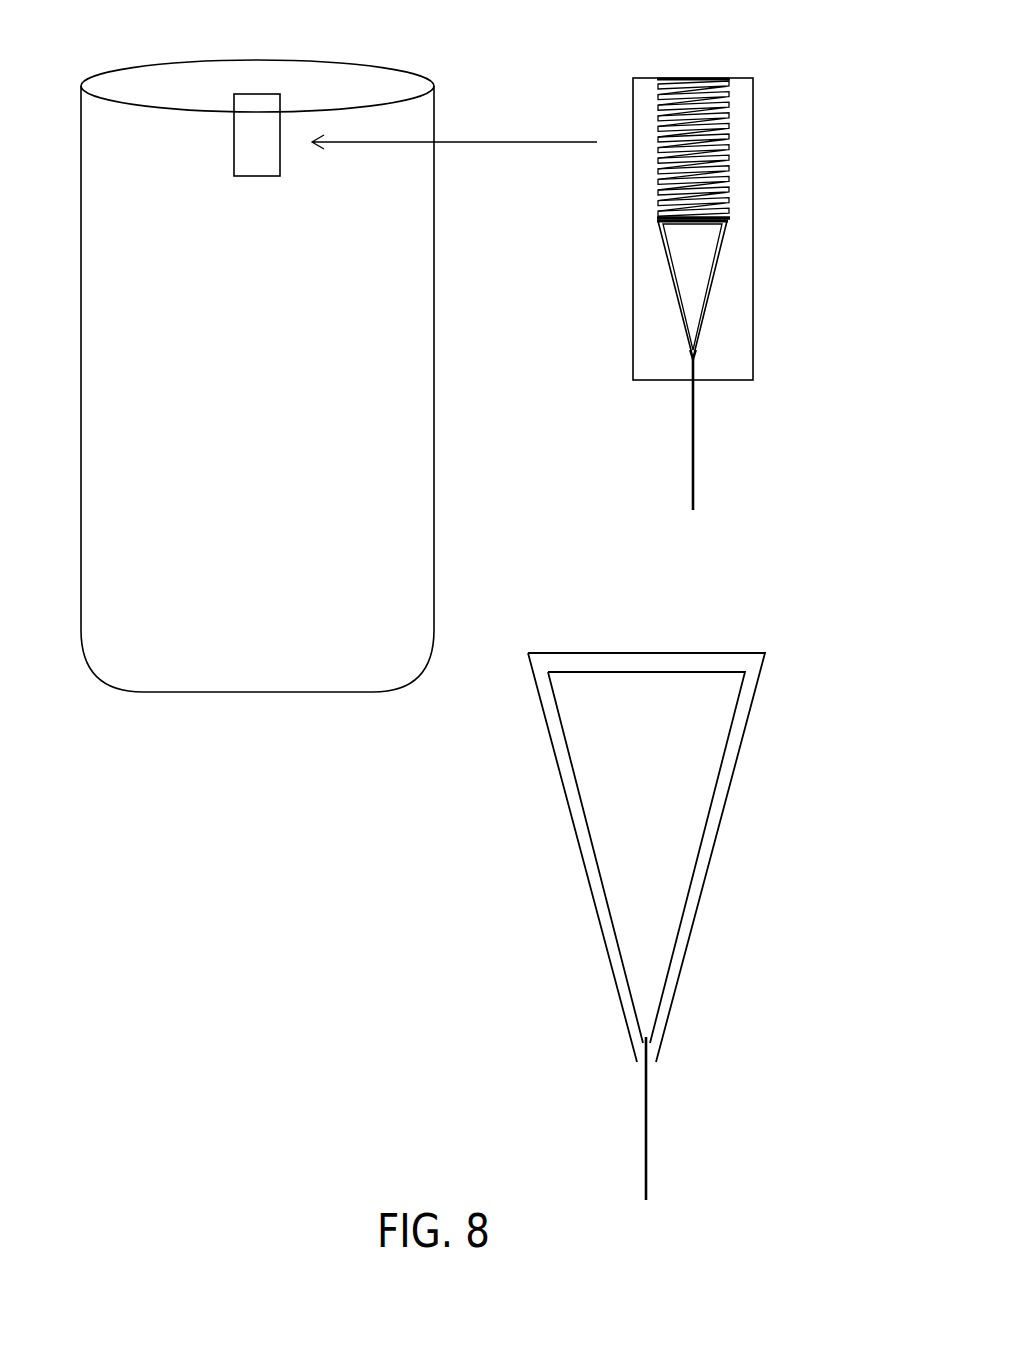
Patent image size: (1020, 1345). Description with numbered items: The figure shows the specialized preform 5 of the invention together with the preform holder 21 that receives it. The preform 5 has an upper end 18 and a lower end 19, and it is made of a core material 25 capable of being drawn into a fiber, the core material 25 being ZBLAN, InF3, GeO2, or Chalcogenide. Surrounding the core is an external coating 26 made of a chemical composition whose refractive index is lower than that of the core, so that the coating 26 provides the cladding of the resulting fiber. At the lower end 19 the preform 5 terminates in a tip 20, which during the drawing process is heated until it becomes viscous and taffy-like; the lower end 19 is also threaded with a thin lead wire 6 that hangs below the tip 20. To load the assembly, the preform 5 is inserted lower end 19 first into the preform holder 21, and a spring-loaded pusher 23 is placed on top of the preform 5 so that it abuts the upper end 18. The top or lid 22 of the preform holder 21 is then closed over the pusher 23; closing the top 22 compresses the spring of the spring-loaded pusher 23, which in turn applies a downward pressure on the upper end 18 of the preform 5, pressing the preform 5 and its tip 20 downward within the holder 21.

The preform 5 is at (661, 641).
The thin lead wire 6 is at (692, 425).
The upper end 18 is at (732, 290).
The lower end 19 is at (732, 292).
The tip 20 is at (692, 358).
The preform holder 21 is at (268, 102).
The top or lid 22 is at (692, 77).
The spring-loaded pusher 23 is at (730, 115).
The core material 25 is at (659, 794).
The external coating 26 is at (716, 882).